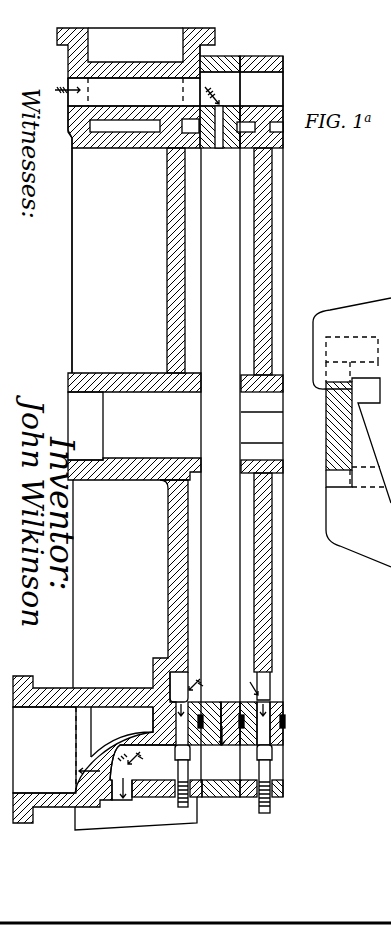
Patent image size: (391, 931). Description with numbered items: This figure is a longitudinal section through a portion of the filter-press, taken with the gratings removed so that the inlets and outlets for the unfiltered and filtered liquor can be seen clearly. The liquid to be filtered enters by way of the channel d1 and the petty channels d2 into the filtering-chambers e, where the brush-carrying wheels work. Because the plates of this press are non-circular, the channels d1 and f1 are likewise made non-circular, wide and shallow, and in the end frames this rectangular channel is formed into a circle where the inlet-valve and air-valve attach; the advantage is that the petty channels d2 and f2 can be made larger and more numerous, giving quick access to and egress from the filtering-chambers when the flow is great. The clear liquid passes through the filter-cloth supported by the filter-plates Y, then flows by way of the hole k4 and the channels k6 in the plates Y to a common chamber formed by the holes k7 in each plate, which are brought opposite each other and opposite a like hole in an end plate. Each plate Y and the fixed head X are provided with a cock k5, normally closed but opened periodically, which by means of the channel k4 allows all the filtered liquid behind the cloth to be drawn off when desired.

The channel d1 is at (175, 89).
The petty channel d2 is at (219, 147).
The filtering-chamber e is at (220, 419).
The filter-plate Y is at (279, 642).
The fixed head X is at (96, 260).
The hole k4 is at (268, 682).
The petty channel f2 is at (226, 703).
The cock k5 is at (136, 770).
The channel k6 is at (266, 734).
The hole k7 is at (227, 773).
The channel f1 is at (83, 750).